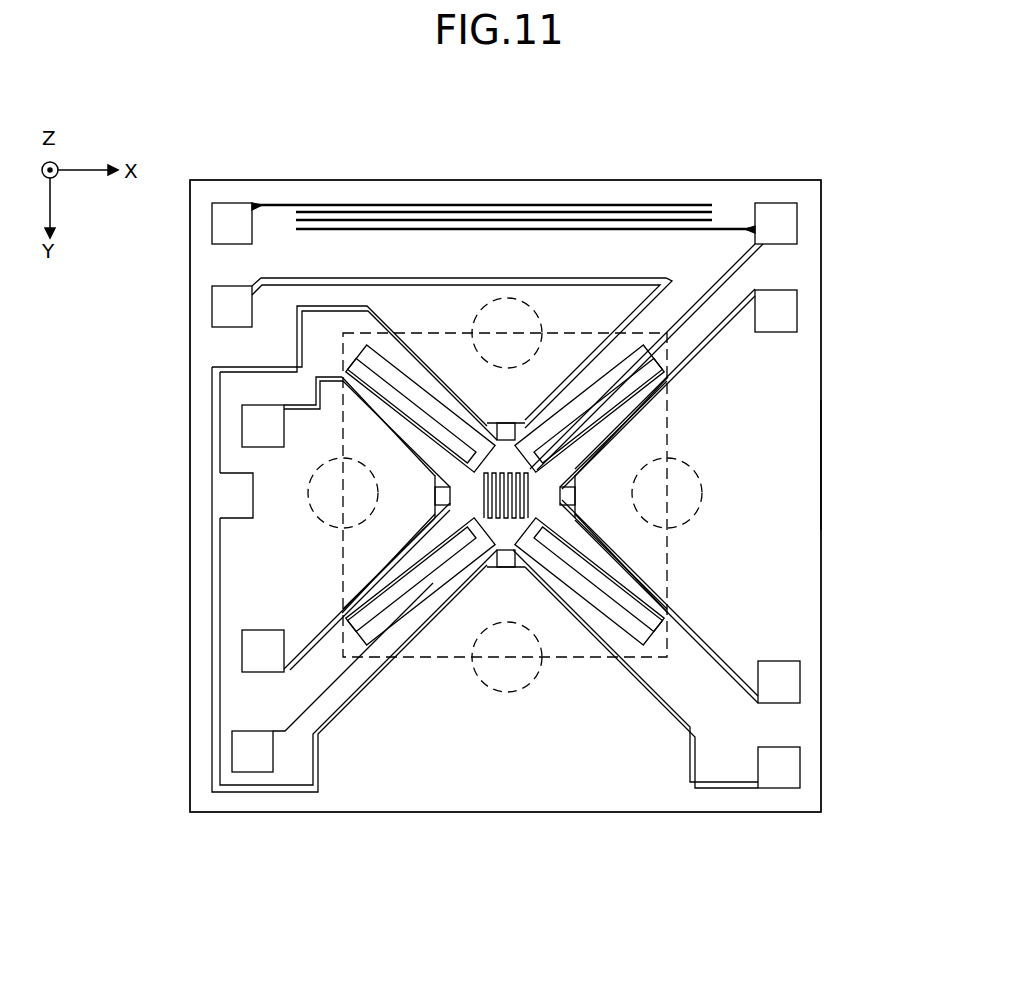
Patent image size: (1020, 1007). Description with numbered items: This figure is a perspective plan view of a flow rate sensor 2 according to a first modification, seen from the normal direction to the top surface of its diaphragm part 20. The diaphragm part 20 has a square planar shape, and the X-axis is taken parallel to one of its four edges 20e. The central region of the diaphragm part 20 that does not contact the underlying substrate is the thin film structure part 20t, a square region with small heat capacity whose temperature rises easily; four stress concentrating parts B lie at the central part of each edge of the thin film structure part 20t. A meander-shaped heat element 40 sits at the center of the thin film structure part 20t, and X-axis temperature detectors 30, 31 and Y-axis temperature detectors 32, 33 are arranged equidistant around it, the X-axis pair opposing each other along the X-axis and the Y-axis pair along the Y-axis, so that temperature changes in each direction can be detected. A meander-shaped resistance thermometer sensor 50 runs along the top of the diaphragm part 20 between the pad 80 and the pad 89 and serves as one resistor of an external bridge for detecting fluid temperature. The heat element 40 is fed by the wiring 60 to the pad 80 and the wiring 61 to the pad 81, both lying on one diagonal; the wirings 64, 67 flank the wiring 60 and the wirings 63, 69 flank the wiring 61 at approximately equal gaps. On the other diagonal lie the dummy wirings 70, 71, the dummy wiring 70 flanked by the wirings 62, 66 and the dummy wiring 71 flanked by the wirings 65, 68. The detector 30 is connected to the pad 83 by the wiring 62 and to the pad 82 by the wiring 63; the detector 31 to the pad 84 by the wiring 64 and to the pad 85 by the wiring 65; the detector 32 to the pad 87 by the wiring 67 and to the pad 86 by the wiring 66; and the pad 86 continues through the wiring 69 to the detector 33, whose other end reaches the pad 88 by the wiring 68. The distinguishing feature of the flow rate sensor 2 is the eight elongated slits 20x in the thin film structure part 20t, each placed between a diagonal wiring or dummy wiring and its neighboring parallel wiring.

The flow rate sensor 2 is at (197, 98).
The diaphragm part 20 is at (802, 181).
The edge 20e is at (822, 465).
The thin film structure part 20t is at (568, 332).
The slit 20x is at (598, 423).
The stress concentrating part B is at (507, 298).
The X-axis temperature detector 30 is at (494, 437).
The X-axis temperature detector 31 is at (562, 502).
The Y-axis temperature detector 32 is at (445, 505).
The Y-axis temperature detector 33 is at (506, 560).
The heat element 40 is at (524, 516).
The resistance thermometer sensor 50 is at (424, 214).
The wiring 60 is at (603, 397).
The wiring 61 is at (362, 688).
The wiring 62 is at (312, 385).
The wiring 63 is at (372, 580).
The wiring 64 is at (668, 397).
The wiring 65 is at (623, 615).
The wiring 66 is at (421, 353).
The wiring 67 is at (588, 350).
The wiring 68 is at (612, 655).
The wiring 69 is at (356, 658).
The dummy wiring 70 is at (368, 343).
The dummy wiring 71 is at (600, 645).
The pad 80 is at (775, 215).
The pad 81 is at (252, 760).
The pad 82 is at (263, 648).
The pad 83 is at (256, 417).
The pad 84 is at (785, 311).
The pad 85 is at (790, 682).
The pad 86 is at (240, 497).
The pad 87 is at (222, 303).
The pad 88 is at (790, 777).
The pad 89 is at (232, 215).